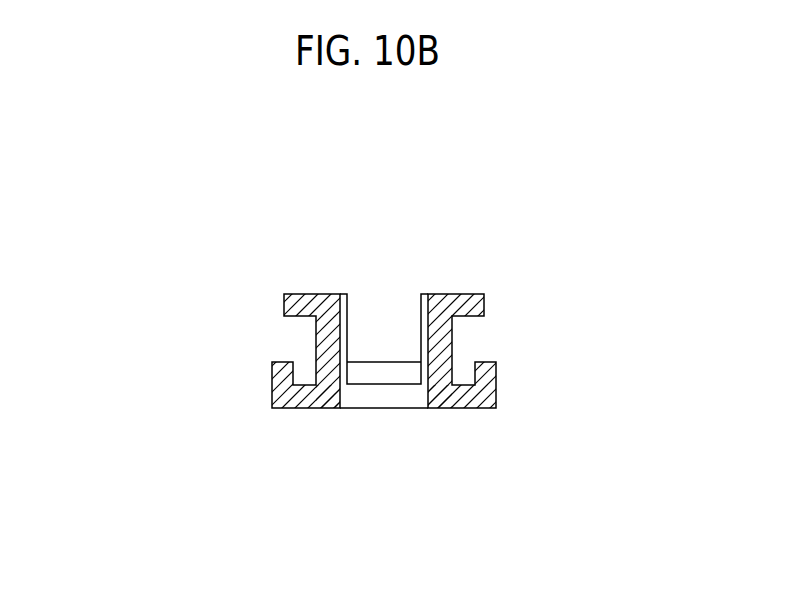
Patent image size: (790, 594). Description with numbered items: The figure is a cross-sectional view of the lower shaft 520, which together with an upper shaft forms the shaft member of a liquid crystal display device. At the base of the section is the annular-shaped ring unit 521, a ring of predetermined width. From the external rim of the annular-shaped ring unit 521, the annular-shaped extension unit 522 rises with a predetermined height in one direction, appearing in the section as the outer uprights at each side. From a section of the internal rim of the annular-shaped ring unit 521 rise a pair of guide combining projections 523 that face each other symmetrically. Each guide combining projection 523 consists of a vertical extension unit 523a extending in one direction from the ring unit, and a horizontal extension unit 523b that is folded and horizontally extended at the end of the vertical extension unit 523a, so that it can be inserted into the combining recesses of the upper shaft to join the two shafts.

The lower shaft 520 is at (522, 239).
The annular-shaped ring unit 521 is at (463, 400).
The annular-shaped extension unit 522 is at (488, 362).
The guide combining projection 523 is at (140, 298).
The vertical extension unit 523a is at (327, 335).
The horizontal extension unit 523b is at (310, 322).